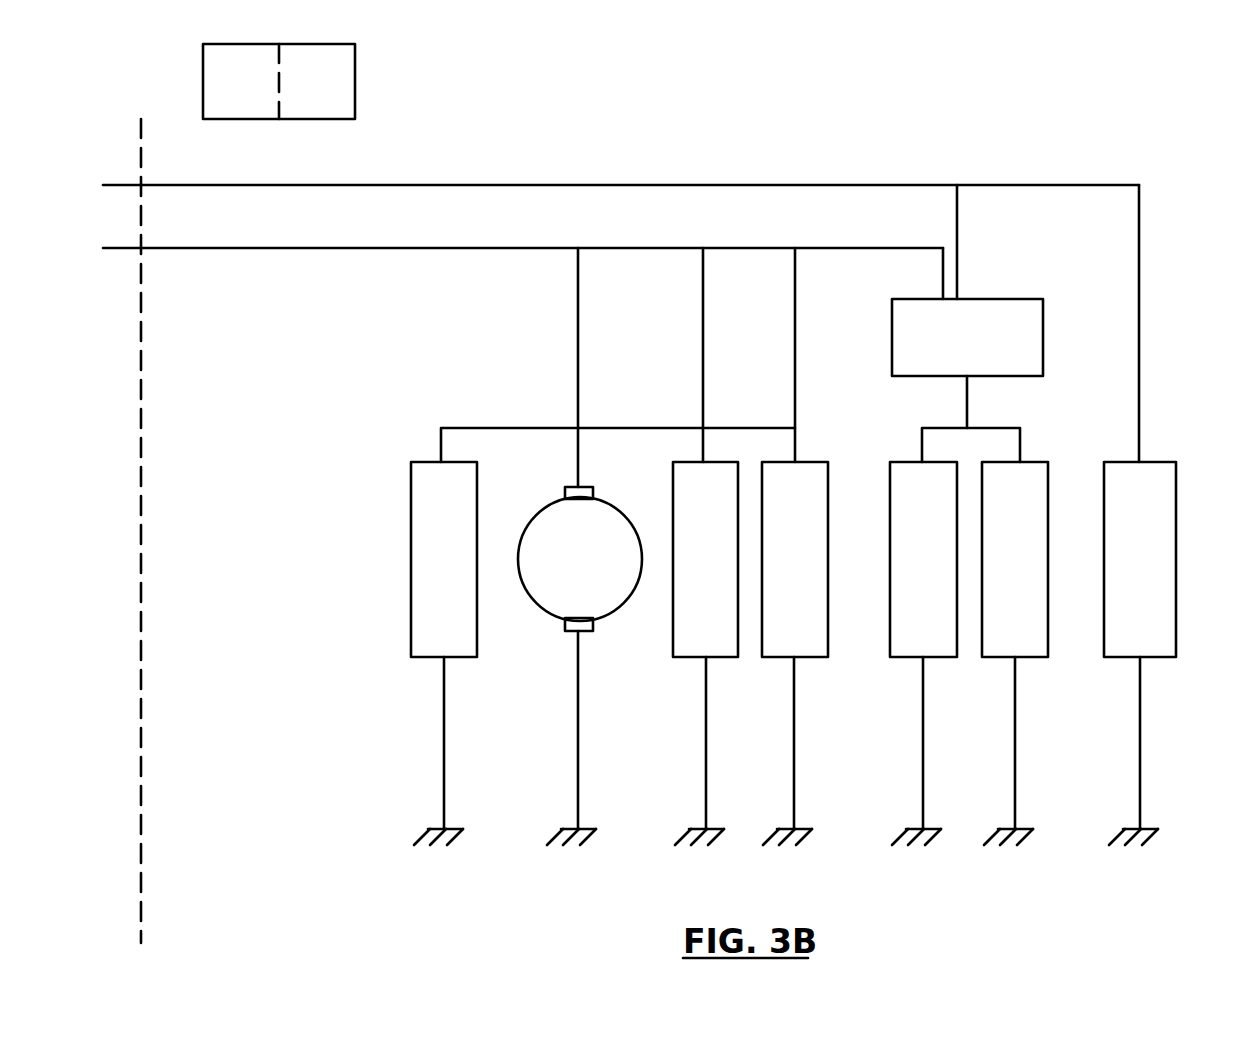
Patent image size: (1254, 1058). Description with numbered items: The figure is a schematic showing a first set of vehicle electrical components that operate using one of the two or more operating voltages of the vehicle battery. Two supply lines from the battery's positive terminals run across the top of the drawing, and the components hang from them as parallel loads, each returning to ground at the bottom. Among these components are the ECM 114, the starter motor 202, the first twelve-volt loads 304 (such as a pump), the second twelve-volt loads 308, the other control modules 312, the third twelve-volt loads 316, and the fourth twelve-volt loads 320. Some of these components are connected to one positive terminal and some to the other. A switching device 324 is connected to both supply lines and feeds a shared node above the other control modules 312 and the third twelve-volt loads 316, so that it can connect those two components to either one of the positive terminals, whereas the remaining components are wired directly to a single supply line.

The ECM 114 is at (430, 461).
The starter motor 202 is at (553, 500).
The first 12 V loads 304 is at (673, 491).
The second 12 V loads 308 is at (828, 477).
The other control modules 312 is at (890, 510).
The third 12 V loads 316 is at (1040, 462).
The fourth 12 V loads 320 is at (1177, 480).
The switching device 324 is at (1000, 299).